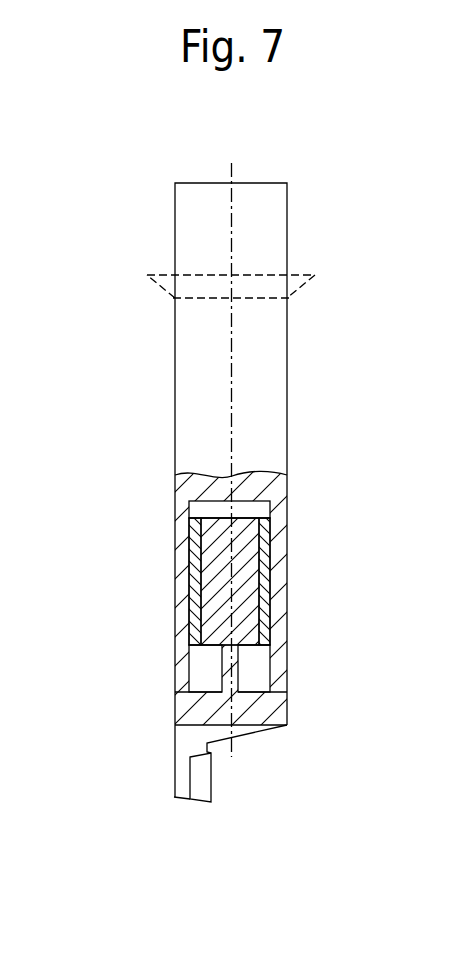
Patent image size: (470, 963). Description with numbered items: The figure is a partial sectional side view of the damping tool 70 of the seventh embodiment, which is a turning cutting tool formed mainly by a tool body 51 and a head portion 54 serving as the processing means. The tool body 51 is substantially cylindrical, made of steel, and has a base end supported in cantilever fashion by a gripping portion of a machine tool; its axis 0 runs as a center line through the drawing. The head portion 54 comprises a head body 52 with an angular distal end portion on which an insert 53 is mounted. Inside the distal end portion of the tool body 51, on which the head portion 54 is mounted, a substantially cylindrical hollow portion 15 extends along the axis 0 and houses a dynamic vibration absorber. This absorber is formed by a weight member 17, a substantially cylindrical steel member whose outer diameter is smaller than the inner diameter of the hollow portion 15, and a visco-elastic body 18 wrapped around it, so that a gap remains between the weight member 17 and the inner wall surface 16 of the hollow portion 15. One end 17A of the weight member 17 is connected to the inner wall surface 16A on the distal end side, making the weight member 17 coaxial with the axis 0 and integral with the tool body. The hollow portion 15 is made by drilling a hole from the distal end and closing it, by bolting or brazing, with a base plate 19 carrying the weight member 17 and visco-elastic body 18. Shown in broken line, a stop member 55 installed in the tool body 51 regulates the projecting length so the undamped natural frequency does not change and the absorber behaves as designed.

The axis 0 is at (232, 232).
The stop member 55 is at (303, 285).
The damping tool 70 is at (321, 490).
The tool body 51 is at (288, 387).
The hollow portion 15 is at (278, 578).
The inner wall surface 16 is at (262, 552).
The weight member 17 is at (257, 618).
The visco-elastic body 18 is at (197, 562).
The inner wall surface on the distal end side 16A is at (210, 690).
The one end of the weight member 17A is at (238, 676).
The base plate 19 is at (278, 710).
The head body 52 is at (182, 788).
The insert 53 is at (200, 782).
The head portion 54 is at (274, 803).